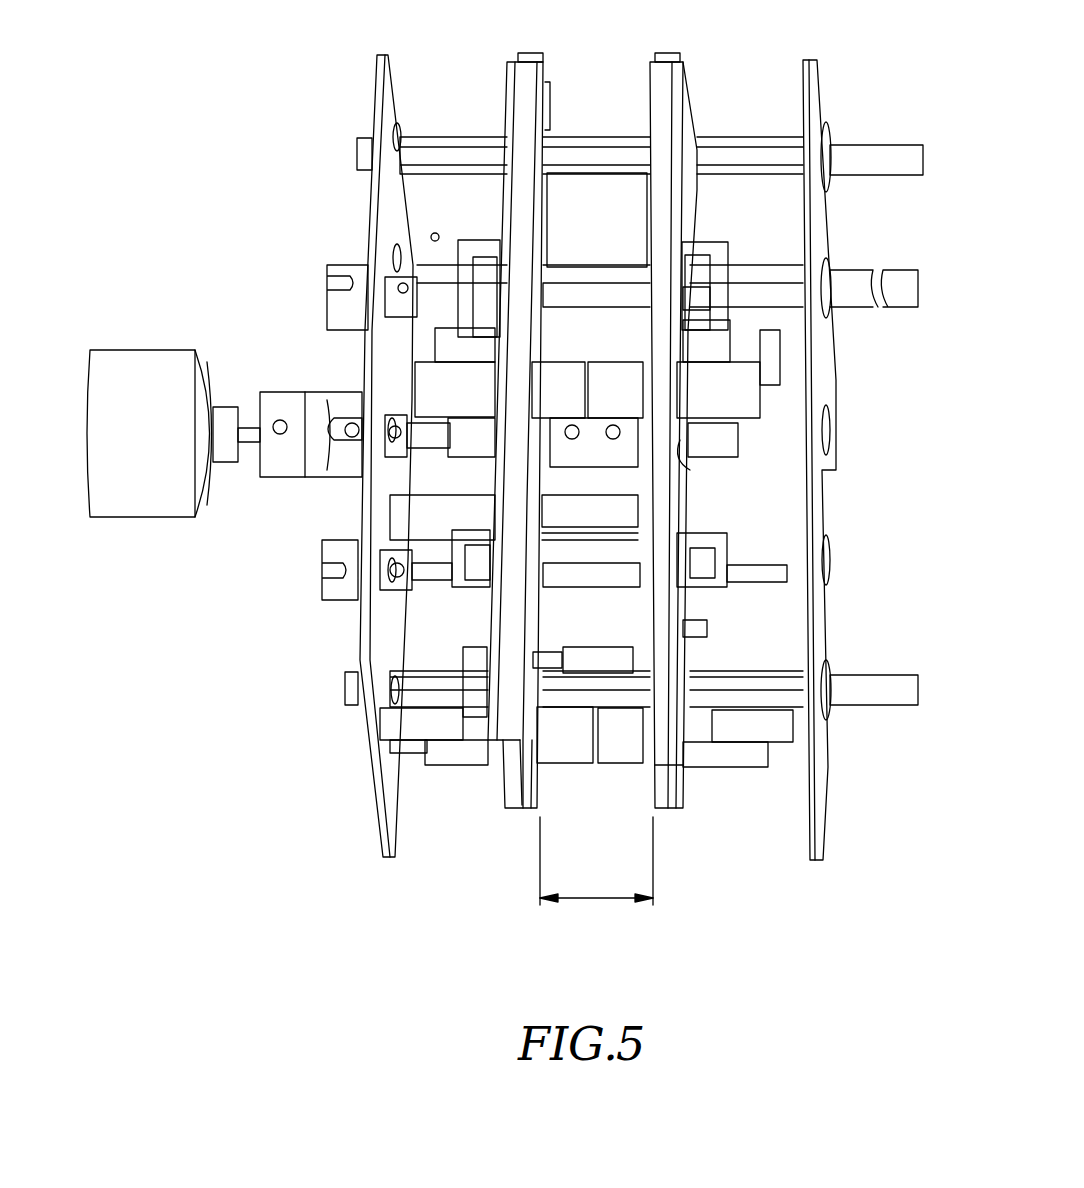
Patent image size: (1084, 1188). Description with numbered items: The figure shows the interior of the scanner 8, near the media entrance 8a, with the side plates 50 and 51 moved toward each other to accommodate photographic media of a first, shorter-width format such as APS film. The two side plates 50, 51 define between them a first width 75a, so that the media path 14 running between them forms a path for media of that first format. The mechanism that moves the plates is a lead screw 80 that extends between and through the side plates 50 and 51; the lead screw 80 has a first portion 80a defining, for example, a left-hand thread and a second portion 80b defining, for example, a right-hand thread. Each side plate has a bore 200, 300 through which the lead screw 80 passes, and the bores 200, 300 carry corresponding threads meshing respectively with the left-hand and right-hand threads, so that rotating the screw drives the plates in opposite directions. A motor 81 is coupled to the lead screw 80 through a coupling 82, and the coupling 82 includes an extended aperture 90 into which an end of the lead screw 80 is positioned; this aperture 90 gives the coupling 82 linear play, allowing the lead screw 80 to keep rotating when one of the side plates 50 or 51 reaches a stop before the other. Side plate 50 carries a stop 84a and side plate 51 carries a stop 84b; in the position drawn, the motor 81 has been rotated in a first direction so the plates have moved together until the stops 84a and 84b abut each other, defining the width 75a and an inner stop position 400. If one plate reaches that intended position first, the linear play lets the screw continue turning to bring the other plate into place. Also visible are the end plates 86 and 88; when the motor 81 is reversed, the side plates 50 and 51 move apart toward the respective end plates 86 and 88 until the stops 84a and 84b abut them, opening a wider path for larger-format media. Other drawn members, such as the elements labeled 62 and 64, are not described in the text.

The scanner 8 is at (745, 891).
The media entrance 8a is at (643, 740).
The media path 14 is at (550, 750).
The side plate 50 is at (688, 110).
The side plate 51 is at (523, 73).
The lower cross shaft 62 is at (560, 577).
The upper cross block 64 is at (593, 295).
The first width 75a is at (602, 900).
The lead screw 80 is at (470, 455).
The first portion 80a is at (552, 437).
The second portion 80b is at (680, 455).
The motor 81 is at (145, 367).
The coupling 82 is at (332, 470).
The stop 84a is at (750, 372).
The stop 84b is at (470, 399).
The end plate 86 is at (818, 432).
The end plate 88 is at (380, 105).
The extended aperture 90 is at (332, 478).
The bore 200 is at (554, 470).
The bore 300 is at (697, 432).
The inner stop position 400 is at (597, 767).